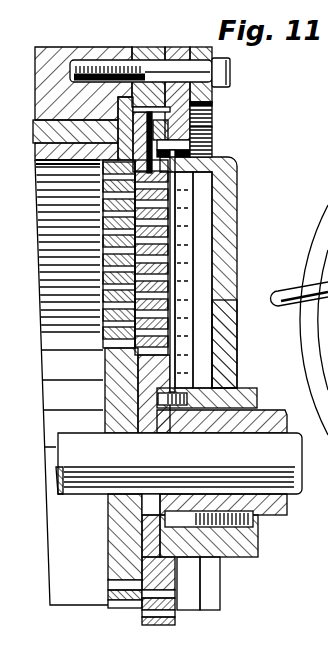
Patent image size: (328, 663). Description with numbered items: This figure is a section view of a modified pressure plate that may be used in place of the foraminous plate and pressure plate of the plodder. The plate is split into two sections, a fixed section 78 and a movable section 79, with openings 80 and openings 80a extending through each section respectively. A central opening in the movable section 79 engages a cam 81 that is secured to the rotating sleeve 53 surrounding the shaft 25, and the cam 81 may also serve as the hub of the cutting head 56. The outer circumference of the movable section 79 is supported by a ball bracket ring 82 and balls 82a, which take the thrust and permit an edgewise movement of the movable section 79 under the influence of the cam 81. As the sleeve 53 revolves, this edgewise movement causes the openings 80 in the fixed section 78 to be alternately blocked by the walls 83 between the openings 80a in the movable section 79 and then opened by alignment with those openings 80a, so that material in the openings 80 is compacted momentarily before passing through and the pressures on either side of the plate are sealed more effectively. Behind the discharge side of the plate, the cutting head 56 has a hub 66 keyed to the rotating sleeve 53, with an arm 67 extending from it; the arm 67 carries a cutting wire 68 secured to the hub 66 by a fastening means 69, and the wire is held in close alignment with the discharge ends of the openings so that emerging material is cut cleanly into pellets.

The shaft 25 is at (179, 463).
The rotating sleeve 53 is at (281, 514).
The cutting head 56 is at (245, 276).
The hub 66 is at (243, 396).
The arm 67 is at (238, 322).
The cutting wire 68 is at (138, 238).
The fastening means 69 is at (200, 390).
The fixed section 78 is at (125, 615).
The movable section 79 is at (160, 626).
The openings 80 is at (105, 311).
The openings 80a is at (168, 262).
The cam 81 is at (238, 546).
The ball bracket ring 82 is at (213, 115).
The balls 82a is at (213, 136).
The walls 83 is at (105, 330).